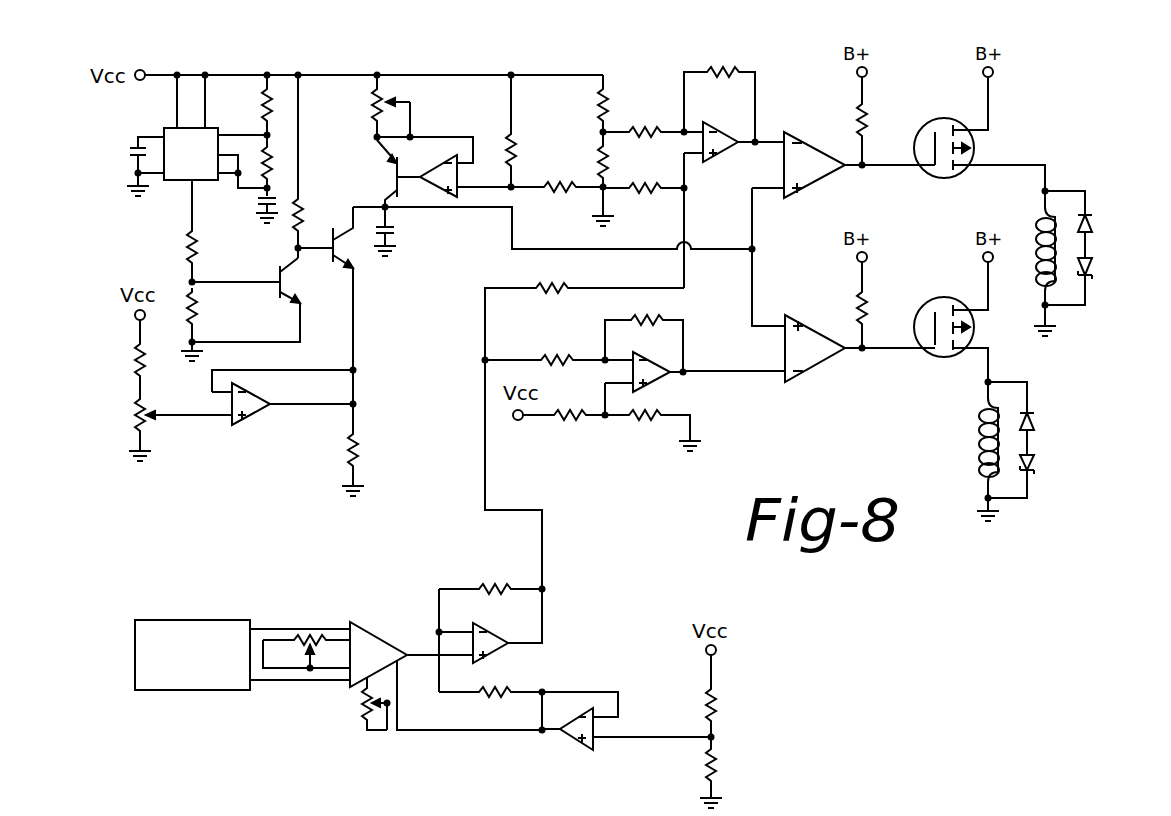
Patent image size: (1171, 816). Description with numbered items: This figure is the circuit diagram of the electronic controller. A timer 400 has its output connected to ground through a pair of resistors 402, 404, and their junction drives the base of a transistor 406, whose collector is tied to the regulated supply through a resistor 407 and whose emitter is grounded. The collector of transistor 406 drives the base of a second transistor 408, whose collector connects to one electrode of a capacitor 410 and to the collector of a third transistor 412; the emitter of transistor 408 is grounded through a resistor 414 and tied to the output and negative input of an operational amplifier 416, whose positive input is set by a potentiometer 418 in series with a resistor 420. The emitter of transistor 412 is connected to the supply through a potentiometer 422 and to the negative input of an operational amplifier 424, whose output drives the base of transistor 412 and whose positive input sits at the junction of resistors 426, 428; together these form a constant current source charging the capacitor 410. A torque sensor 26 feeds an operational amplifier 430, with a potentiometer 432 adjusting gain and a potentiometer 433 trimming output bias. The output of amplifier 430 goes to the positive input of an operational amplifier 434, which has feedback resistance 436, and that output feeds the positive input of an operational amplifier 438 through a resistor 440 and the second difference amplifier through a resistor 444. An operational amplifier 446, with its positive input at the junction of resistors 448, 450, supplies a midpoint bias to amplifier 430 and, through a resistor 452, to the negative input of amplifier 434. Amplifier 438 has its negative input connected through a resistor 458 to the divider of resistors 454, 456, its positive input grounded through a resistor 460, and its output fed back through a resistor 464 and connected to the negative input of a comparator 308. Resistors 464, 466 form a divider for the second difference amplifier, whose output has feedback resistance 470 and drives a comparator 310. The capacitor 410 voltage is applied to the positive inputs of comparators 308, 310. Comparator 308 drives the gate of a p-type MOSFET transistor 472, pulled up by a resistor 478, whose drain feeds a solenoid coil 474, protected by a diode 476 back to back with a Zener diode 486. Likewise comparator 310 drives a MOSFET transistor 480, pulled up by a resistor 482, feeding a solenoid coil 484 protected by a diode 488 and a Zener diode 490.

The torque sensor 26 is at (195, 620).
The comparator 308 is at (805, 135).
The comparator 310 is at (820, 372).
The timer 400 is at (170, 182).
The resistor 402 is at (200, 240).
The resistor 404 is at (190, 310).
The transistor 406 is at (290, 300).
The resistor 407 is at (296, 238).
The second transistor 408 is at (305, 240).
The capacitor 410 is at (396, 230).
The third transistor 412 is at (383, 160).
The resistor 414 is at (362, 452).
The operational amplifier 416 is at (250, 412).
The potentiometer 418 is at (132, 432).
The resistor 420 is at (133, 365).
The potentiometer 422 is at (375, 110).
The operational amplifier 424 is at (435, 130).
The resistor 426 is at (520, 140).
The resistor 428 is at (582, 160).
The operational amplifier 430 is at (373, 630).
The potentiometer 432 is at (315, 640).
The potentiometer 433 is at (360, 708).
The operational amplifier 434 is at (522, 605).
The resistance 436 is at (515, 552).
The operational amplifier 438 is at (730, 150).
The resistor 440 is at (545, 285).
The resistor 444 is at (558, 355).
The operational amplifier 446 is at (572, 745).
The resistor 448 is at (720, 705).
The resistor 450 is at (720, 765).
The resistor 452 is at (490, 697).
The resistor 454 is at (612, 100).
The resistor 456 is at (612, 170).
The resistor 458 is at (635, 125).
The resistor 460 is at (635, 195).
The resistor 464 is at (700, 75).
The resistor 466 is at (635, 425).
The resistance 470 is at (655, 318).
The MOSFET transistor 472 is at (930, 125).
The solenoid coil 474 is at (1040, 240).
The diode 476 is at (1090, 228).
The resistor 478 is at (870, 120).
The MOSFET transistor 480 is at (945, 285).
The resistor 482 is at (856, 300).
The solenoid coil 484 is at (978, 450).
The Zener diode 486 is at (1090, 278).
The diode 488 is at (1032, 412).
The Zener diode 490 is at (1034, 472).